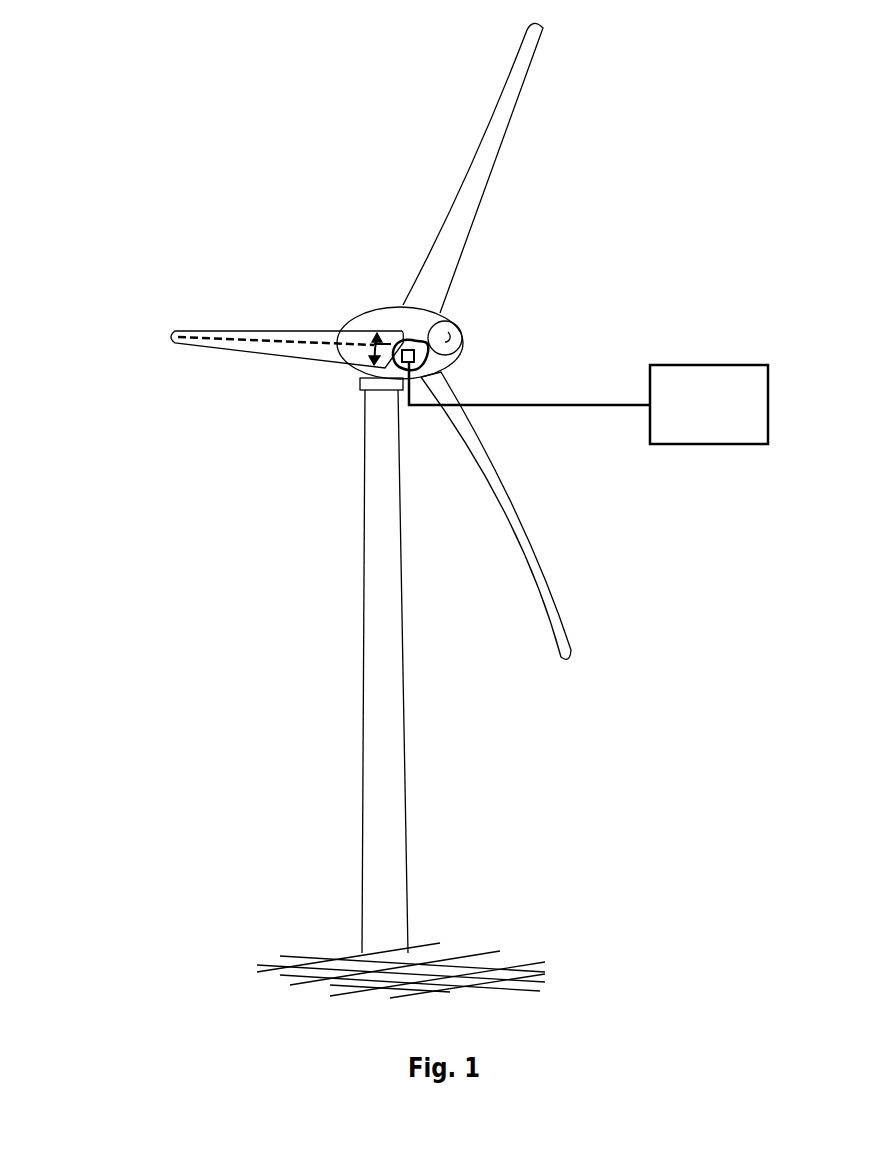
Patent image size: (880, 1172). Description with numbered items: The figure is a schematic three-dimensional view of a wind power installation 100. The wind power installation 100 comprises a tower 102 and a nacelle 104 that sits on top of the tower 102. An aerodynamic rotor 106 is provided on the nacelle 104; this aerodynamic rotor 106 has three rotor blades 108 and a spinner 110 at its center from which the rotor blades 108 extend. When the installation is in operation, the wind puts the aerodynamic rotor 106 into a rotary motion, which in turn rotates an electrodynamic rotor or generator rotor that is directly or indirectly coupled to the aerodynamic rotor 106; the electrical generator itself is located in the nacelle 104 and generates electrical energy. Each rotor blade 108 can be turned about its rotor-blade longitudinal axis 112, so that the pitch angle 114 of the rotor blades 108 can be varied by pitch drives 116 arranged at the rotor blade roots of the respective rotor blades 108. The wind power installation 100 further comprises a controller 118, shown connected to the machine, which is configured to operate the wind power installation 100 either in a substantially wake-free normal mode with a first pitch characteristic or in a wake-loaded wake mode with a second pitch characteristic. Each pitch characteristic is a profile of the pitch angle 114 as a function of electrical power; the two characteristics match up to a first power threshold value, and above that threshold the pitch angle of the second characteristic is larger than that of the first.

The wind power installation 100 is at (327, 441).
The tower 102 is at (390, 758).
The nacelle 104 is at (380, 322).
The aerodynamic rotor 106 is at (568, 242).
The rotor blades 108 is at (497, 130).
The spinner 110 is at (464, 343).
The rotor-blade longitudinal axis 112 is at (240, 331).
The pitch angle 114 is at (372, 354).
The pitch drive 116 is at (410, 350).
The controller 118 is at (588, 403).